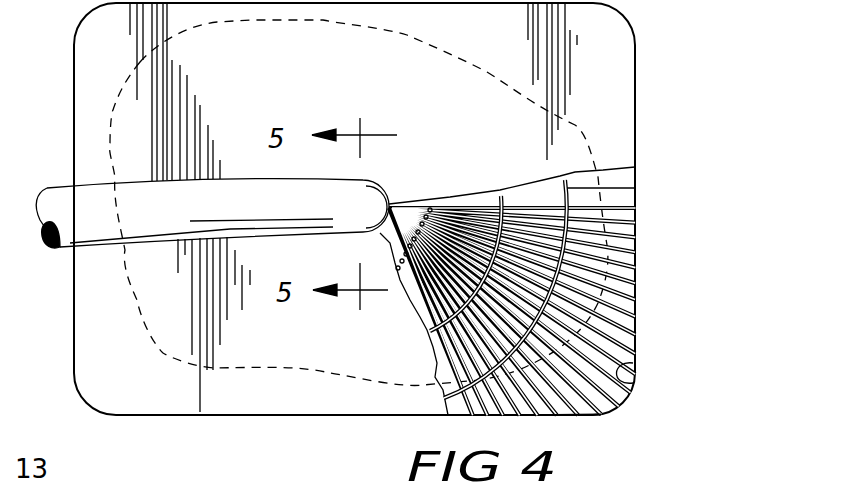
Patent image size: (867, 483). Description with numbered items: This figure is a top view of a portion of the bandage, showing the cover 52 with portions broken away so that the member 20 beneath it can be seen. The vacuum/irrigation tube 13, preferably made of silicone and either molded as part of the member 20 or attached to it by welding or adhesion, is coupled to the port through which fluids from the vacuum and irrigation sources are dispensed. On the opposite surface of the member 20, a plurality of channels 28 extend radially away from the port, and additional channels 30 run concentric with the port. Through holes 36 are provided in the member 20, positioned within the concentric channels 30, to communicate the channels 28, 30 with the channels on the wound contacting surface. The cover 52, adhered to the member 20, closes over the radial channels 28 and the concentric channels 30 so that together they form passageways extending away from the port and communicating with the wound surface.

The vacuum/irrigation tube 13 is at (75, 203).
The member 20 is at (564, 316).
The channels 28 is at (636, 382).
The channels 30 is at (603, 230).
The through holes 36 is at (601, 416).
The cover 52 is at (625, 60).